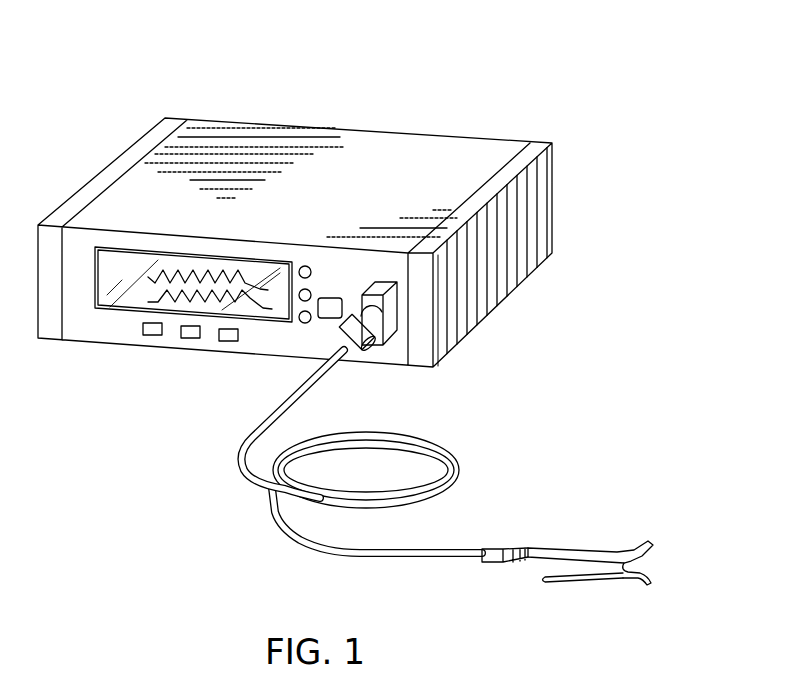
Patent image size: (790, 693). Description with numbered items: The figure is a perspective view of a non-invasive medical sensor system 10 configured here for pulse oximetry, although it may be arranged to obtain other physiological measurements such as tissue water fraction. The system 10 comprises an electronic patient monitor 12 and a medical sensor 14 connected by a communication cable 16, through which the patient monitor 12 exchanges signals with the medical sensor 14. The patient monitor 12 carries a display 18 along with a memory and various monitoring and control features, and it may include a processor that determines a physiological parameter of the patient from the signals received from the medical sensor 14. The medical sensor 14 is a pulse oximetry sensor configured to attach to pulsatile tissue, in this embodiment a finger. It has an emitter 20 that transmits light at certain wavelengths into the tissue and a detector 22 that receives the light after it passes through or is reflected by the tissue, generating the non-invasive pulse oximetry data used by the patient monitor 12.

The non-invasive medical sensor system 10 is at (531, 64).
The electronic patient monitor 12 is at (402, 133).
The medical sensor 14 is at (676, 543).
The communication cable 16 is at (248, 537).
The display 18 is at (137, 312).
The emitter 20 is at (587, 553).
The detector 22 is at (585, 580).